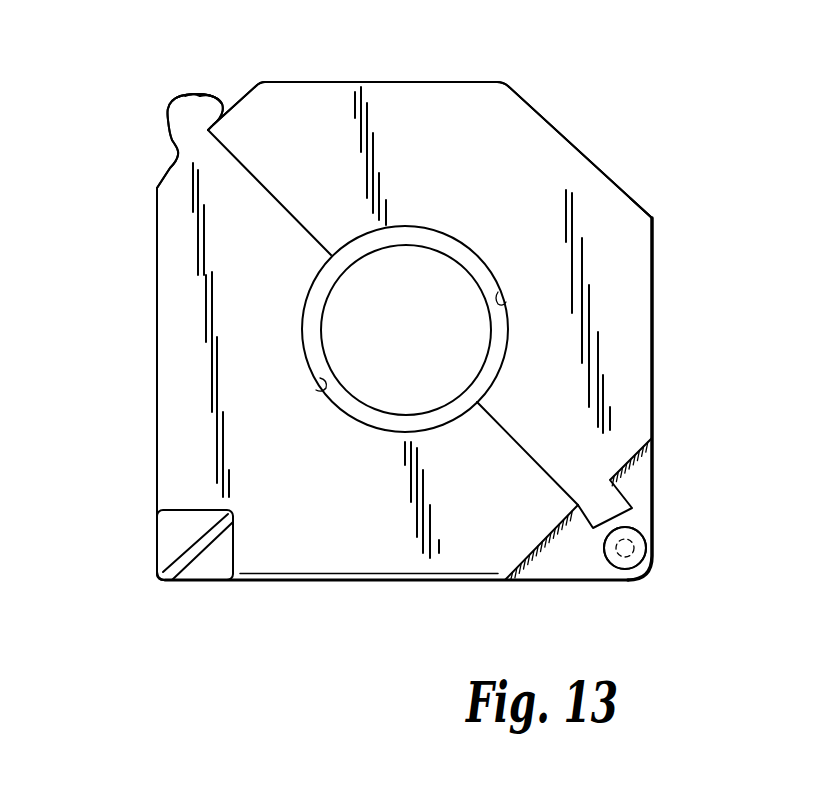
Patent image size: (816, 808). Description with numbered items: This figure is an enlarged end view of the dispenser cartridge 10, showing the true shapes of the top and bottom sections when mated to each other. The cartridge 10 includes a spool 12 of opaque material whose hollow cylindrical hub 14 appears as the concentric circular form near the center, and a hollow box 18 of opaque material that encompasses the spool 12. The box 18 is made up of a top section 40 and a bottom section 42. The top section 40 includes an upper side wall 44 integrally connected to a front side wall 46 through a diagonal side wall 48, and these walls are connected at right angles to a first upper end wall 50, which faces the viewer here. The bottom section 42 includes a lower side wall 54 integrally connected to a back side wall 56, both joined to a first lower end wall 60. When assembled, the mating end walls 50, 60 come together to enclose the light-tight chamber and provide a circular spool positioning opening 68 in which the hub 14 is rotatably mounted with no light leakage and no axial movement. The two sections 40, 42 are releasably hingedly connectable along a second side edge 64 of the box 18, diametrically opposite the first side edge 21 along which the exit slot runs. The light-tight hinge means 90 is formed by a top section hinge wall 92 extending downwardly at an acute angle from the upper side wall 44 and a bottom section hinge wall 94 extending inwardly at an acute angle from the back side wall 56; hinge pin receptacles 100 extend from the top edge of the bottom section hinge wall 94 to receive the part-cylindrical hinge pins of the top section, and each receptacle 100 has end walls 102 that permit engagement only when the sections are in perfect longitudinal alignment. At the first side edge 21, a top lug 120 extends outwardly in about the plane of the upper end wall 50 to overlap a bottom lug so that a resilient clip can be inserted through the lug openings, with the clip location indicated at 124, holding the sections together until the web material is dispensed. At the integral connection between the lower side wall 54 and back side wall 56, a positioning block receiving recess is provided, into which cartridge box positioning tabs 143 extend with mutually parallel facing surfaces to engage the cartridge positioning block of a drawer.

The dispenser cartridge 10 is at (600, 94).
The spool 12 is at (413, 227).
The hollow cylindrical hub 14 is at (460, 253).
The hollow box 18 is at (652, 218).
The first side edge 21 is at (660, 559).
The top section 40 is at (383, 80).
The bottom section 42 is at (157, 320).
The upper side wall 44 is at (437, 82).
The front side wall 46 is at (652, 320).
The diagonal side wall 48 is at (603, 170).
The first upper end wall 50 is at (323, 93).
The lower side wall 54 is at (372, 582).
The back side wall 56 is at (157, 378).
The first lower end wall 60 is at (241, 262).
The second side edge 64 is at (160, 85).
The circular spool positioning opening 68 is at (290, 375).
The hinge means 90 is at (160, 113).
The top section hinge wall 92 is at (252, 85).
The bottom section hinge wall 94 is at (170, 172).
The hinge pin receptacle 100 is at (193, 95).
The end wall 102 is at (198, 97).
The top lug 120 is at (572, 563).
The pivot pin 124 is at (643, 527).
The cartridge box positioning tab 143 is at (212, 553).